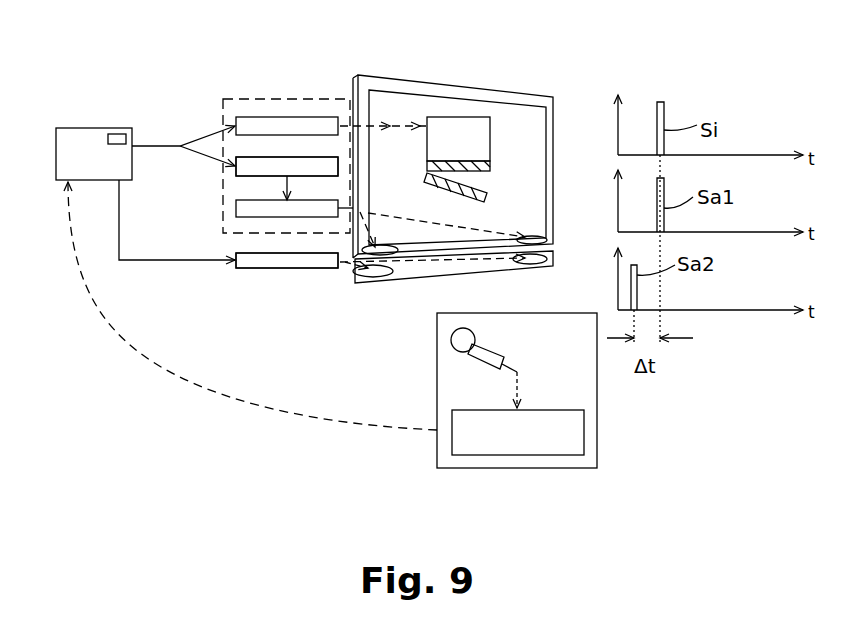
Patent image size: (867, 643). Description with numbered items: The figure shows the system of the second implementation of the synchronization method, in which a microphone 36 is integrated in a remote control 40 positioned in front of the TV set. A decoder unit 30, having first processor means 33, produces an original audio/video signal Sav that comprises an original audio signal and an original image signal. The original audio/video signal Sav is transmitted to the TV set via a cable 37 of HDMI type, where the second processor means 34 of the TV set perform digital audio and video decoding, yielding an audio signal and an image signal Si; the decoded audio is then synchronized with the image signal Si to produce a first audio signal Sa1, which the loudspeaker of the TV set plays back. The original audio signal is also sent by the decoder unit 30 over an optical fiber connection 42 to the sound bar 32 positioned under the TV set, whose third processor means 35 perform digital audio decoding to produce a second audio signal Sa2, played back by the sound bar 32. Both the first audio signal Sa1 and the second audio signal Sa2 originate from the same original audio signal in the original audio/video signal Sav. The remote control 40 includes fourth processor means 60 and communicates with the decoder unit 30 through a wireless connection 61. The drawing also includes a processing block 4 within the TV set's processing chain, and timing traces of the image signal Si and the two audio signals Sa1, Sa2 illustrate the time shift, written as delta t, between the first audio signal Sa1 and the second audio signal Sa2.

The decoder unit 30 is at (80, 128).
The first processor means 33 is at (122, 133).
The cable 37 is at (175, 146).
The second processor means 34 is at (285, 98).
The processing block 4 is at (240, 177).
The optical fiber connection 42 is at (153, 260).
The third processor means 35 is at (292, 270).
The microphone 36 is at (517, 130).
The sound bar 32 is at (413, 272).
The remote control 40 is at (597, 415).
The fourth processor means 60 is at (525, 445).
The wireless connection 61 is at (193, 385).
The original audio/video signal Sav is at (165, 160).
The image signal Si is at (383, 140).
The first audio signal Sa1 is at (380, 207).
The second audio signal Sa2 is at (343, 265).